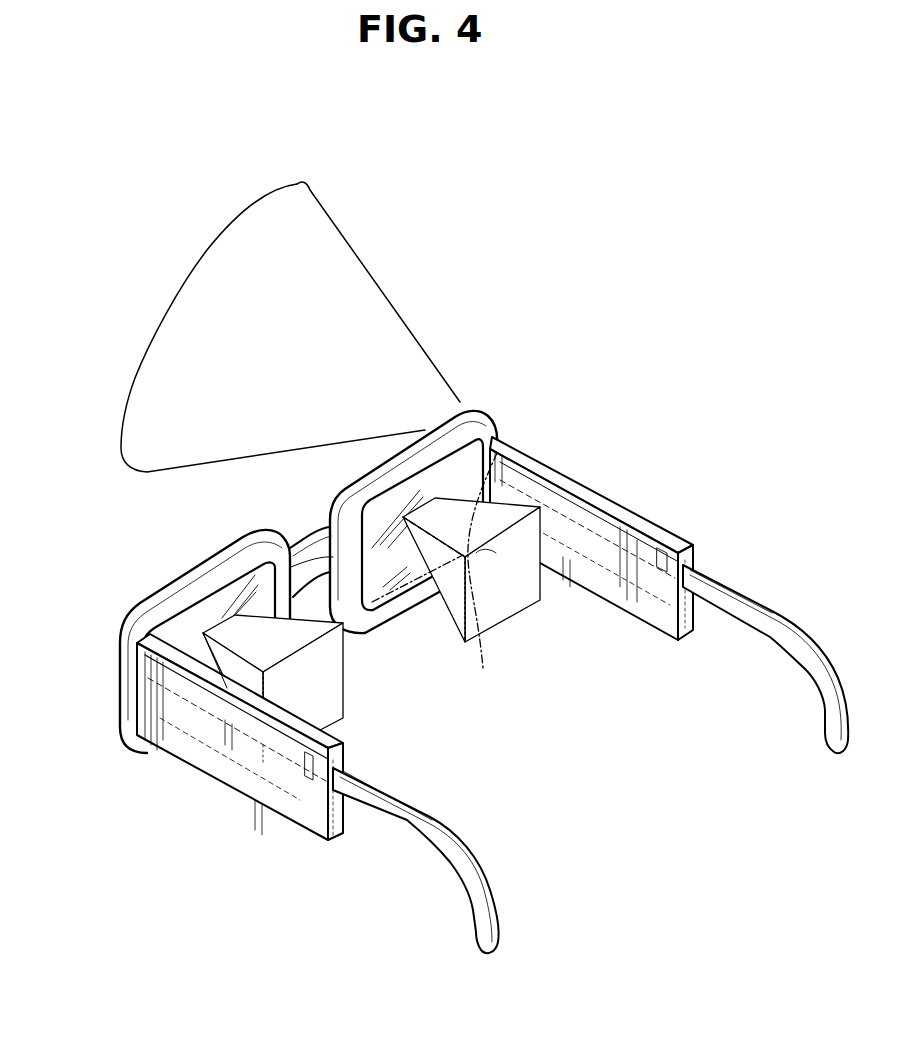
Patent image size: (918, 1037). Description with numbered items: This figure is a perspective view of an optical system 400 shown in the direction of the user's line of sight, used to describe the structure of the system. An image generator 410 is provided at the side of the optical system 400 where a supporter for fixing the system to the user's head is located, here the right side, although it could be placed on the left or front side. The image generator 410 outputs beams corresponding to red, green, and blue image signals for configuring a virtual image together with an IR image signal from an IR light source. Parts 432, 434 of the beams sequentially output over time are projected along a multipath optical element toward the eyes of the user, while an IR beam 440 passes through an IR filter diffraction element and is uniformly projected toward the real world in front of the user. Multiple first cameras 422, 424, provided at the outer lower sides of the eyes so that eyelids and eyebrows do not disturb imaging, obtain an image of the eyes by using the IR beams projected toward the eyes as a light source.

The optical system 400 is at (120, 657).
The image generator 410 is at (597, 517).
The first camera 422 is at (150, 752).
The first camera 424 is at (483, 645).
The part of beams 432 is at (330, 677).
The part of beams 434 is at (508, 603).
The IR beam 440 is at (222, 237).